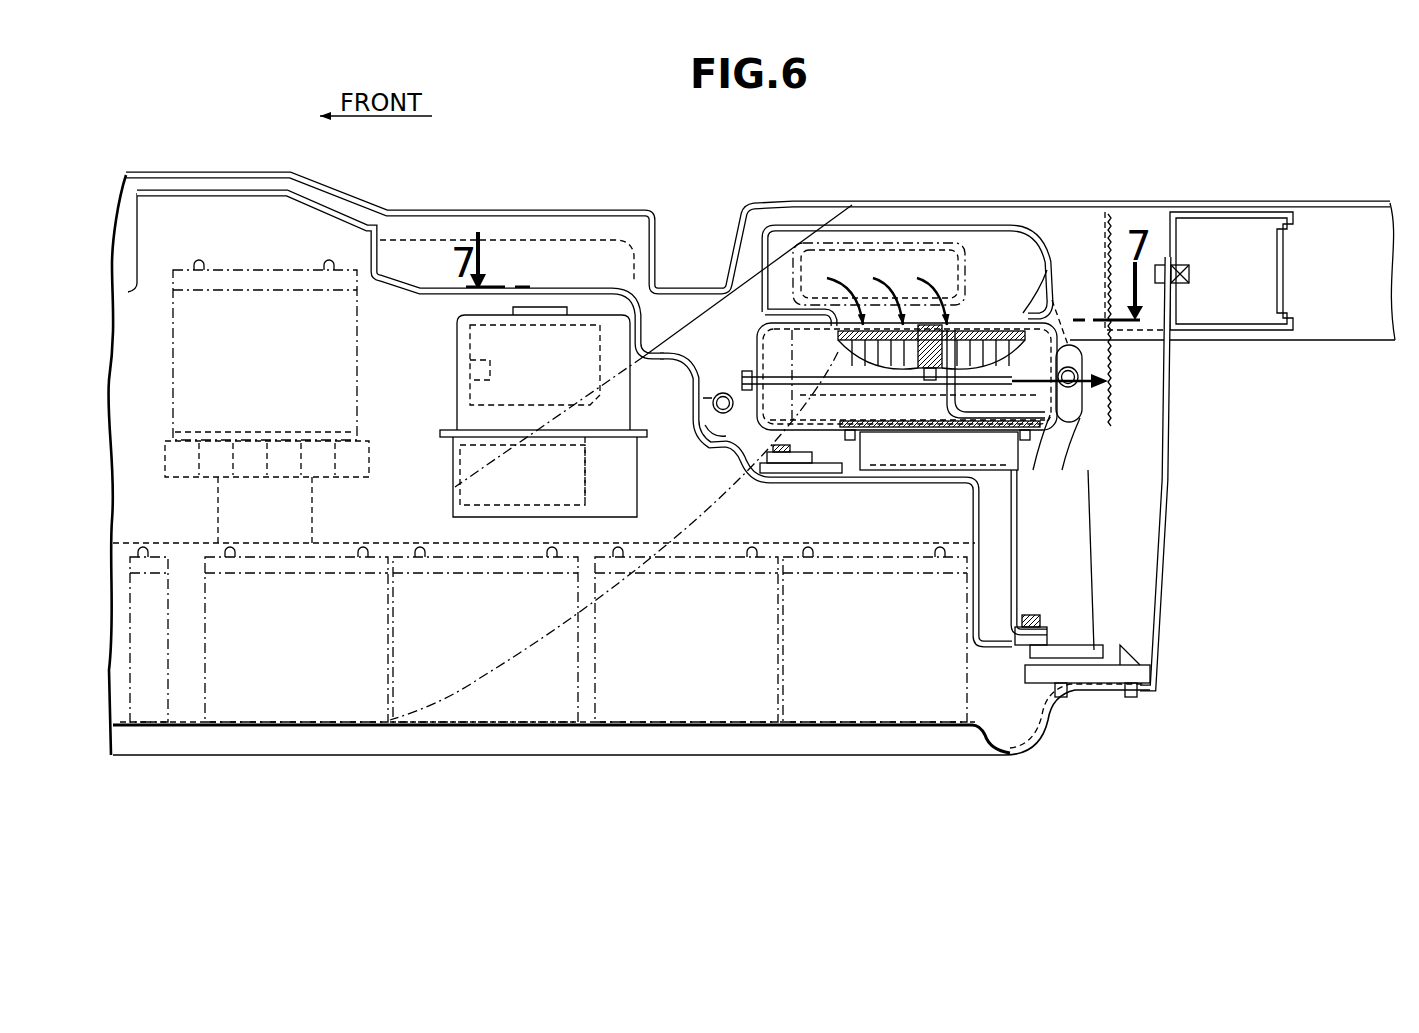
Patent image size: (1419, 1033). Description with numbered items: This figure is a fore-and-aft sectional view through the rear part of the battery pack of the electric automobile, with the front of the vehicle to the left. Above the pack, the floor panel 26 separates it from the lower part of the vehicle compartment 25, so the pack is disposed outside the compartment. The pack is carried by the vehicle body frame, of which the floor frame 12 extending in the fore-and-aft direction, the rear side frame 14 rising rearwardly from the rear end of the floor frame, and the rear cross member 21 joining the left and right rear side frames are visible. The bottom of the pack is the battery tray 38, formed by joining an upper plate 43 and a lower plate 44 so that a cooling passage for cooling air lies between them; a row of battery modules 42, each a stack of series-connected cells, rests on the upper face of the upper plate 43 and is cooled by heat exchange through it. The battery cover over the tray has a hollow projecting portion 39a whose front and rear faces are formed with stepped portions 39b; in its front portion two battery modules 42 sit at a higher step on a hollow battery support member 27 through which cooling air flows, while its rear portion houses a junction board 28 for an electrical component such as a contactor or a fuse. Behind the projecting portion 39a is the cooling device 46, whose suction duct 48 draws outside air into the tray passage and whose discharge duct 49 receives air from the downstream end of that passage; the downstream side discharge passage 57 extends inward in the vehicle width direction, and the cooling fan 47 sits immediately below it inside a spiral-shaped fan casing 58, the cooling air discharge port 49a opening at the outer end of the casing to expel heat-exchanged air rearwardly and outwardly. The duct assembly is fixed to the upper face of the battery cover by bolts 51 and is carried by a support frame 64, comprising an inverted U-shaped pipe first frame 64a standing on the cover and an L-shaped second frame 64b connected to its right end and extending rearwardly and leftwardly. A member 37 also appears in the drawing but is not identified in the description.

The floor frame 12 is at (192, 540).
The rear side frame 14 is at (1343, 332).
The rear cross member 21 is at (1228, 333).
The vehicle compartment 25 is at (766, 173).
The floor panel 26 is at (538, 208).
The battery support member 27 is at (248, 478).
The junction board 28 is at (455, 388).
The rear wall panel 37 is at (1165, 500).
The battery tray 38 is at (631, 751).
The projecting portion 39a is at (332, 222).
The stepped portion 39b is at (667, 358).
The battery module 42 is at (257, 268).
The upper plate 43 is at (425, 730).
The lower plate 44 is at (432, 820).
The cooling device 46 is at (920, 204).
The cooling fan 47 is at (878, 335).
The suction duct 48 is at (1095, 490).
The discharge duct 49 is at (1028, 232).
The cooling air discharge port 49a is at (1050, 428).
The bolt 51 is at (790, 447).
The downstream side discharge passage 57 is at (986, 293).
The fan casing 58 is at (776, 347).
The support frame 64 is at (1088, 400).
The first frame 64a is at (710, 404).
The second frame 64b is at (1082, 375).